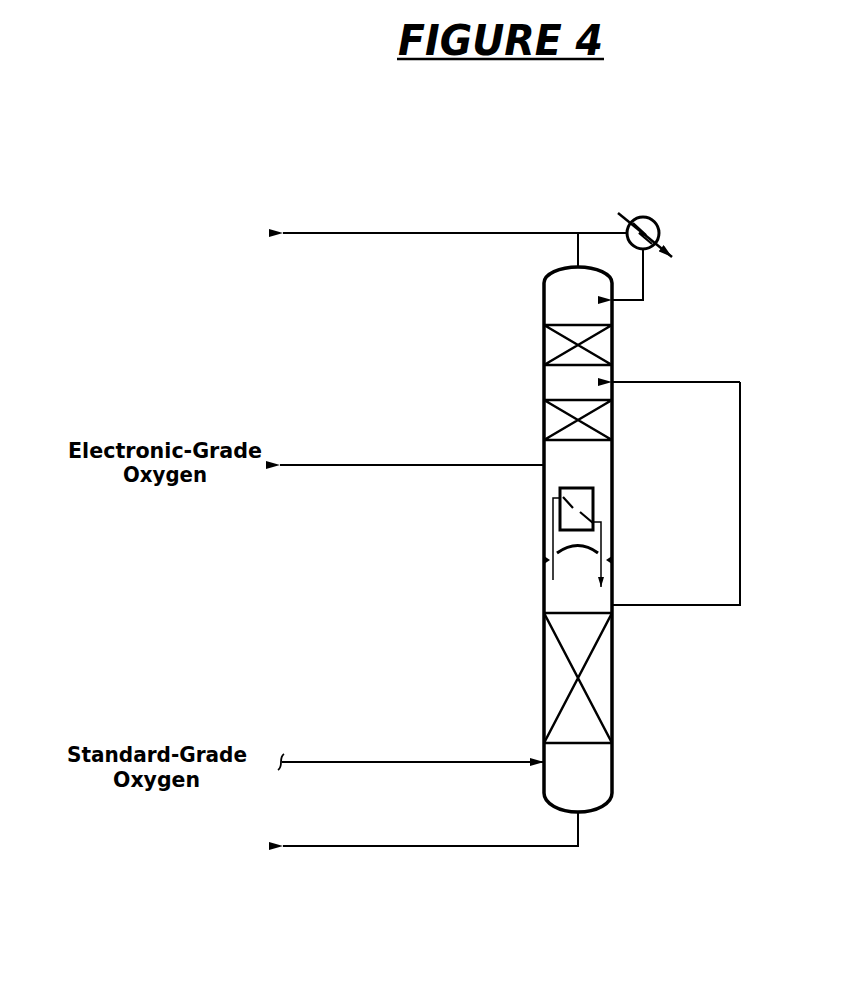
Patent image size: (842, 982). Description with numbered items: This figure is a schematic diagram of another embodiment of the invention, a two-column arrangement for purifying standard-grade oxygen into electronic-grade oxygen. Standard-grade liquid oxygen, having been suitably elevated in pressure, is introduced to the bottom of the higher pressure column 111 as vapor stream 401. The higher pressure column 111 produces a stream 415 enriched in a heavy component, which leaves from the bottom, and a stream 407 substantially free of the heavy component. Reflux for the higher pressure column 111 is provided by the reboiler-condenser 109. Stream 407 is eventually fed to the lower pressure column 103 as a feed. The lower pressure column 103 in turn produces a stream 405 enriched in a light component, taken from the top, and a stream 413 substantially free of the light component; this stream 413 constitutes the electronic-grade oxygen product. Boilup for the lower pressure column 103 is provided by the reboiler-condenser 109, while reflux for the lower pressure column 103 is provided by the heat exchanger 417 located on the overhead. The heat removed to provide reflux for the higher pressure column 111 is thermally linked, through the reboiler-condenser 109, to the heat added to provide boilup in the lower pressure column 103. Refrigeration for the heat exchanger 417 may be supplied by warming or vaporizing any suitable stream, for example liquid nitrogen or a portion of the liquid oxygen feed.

The stream enriched in a light component 405 is at (432, 234).
The heat exchanger 417 is at (655, 218).
The lower pressure column 103 is at (544, 378).
The stream substantially free of the heavy component 407 is at (742, 511).
The reboiler-condenser 109 is at (593, 506).
The stream substantially free of the light component 413 is at (355, 467).
The higher pressure column 111 is at (544, 672).
The vapor stream 401 is at (413, 765).
The stream enriched in a heavy component 415 is at (403, 848).